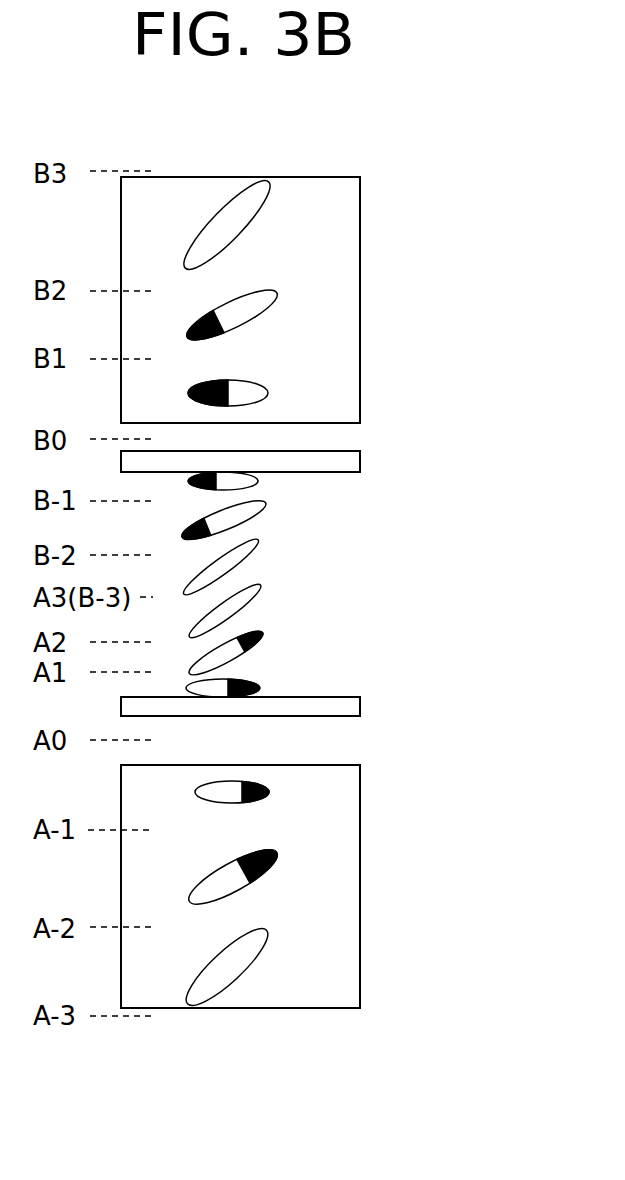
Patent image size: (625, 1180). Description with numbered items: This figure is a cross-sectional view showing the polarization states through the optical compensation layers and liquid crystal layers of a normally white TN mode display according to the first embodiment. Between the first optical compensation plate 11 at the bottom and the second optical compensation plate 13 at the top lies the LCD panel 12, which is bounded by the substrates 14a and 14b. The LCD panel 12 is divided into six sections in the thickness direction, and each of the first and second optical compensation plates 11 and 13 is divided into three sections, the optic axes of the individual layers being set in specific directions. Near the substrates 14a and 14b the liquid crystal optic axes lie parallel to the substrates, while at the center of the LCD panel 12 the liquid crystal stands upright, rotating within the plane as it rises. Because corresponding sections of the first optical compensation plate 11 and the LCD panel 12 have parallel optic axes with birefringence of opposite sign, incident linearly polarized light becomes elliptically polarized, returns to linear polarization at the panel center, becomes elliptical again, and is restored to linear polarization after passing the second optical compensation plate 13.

The first optical compensation plate 11 is at (360, 850).
The LCD panel 12 is at (425, 480).
The second optical compensation plate 13 is at (360, 297).
The substrate 14a is at (337, 697).
The substrate 14b is at (341, 463).